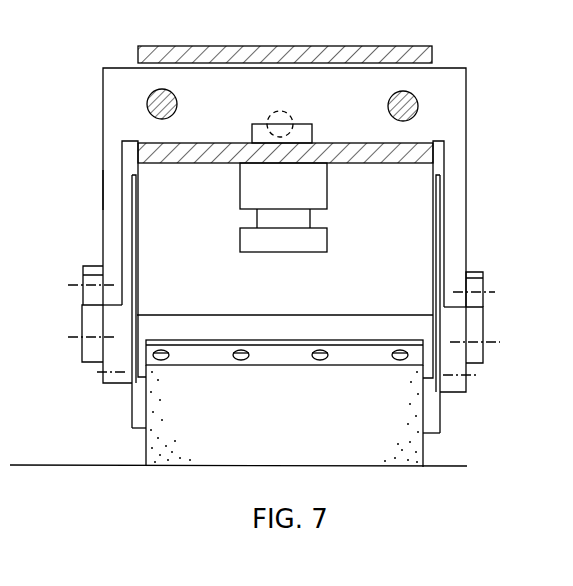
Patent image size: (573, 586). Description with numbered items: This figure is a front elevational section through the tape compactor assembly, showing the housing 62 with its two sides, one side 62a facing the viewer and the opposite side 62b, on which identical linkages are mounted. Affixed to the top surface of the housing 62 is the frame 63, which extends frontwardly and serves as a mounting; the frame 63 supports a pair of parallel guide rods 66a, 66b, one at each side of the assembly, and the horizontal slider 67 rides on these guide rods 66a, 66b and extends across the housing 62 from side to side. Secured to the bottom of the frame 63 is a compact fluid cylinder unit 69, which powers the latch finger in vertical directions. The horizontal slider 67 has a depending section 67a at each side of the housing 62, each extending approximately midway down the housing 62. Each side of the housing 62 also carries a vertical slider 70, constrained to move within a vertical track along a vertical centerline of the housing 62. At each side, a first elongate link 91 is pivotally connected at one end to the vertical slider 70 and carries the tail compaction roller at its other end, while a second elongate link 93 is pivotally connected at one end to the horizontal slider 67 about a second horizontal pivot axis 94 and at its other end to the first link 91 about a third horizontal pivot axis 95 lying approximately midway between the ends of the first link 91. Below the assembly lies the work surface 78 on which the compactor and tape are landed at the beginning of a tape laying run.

The housing 62 is at (285, 229).
The side of the housing 62a is at (138, 163).
The opposite side of the housing 62b is at (436, 170).
The frame 63 is at (257, 46).
The guide rod 66a is at (173, 92).
The guide rod 66b is at (389, 96).
The horizontal slider 67 is at (114, 68).
The depending section 67a is at (103, 190).
The compact fluid cylinder unit 69 is at (327, 190).
The vertical slider 70 is at (131, 212).
The work surface 78 is at (112, 465).
The first elongate link 91 is at (103, 385).
The second elongate link 93 is at (82, 317).
The second horizontal pivot axis 94 is at (72, 338).
The third horizontal pivot axis 95 is at (83, 286).